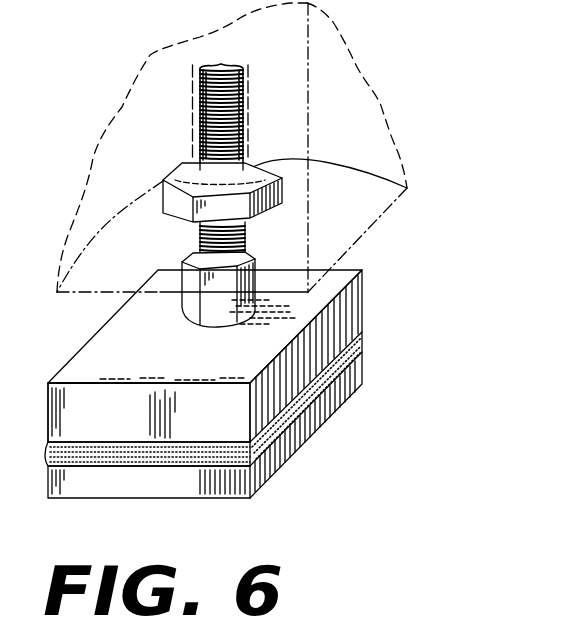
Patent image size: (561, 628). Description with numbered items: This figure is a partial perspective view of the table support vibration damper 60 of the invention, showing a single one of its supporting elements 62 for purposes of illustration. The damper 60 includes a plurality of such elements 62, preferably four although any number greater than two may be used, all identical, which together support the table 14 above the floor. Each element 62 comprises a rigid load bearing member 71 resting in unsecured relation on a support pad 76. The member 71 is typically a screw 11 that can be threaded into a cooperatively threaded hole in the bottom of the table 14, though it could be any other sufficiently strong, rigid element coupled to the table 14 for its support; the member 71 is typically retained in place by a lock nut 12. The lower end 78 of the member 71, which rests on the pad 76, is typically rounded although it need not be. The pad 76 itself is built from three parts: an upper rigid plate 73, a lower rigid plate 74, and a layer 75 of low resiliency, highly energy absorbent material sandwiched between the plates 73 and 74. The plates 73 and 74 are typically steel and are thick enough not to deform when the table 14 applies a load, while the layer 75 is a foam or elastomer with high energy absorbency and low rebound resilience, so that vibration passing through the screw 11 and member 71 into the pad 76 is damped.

The threaded bolt 11 is at (243, 101).
The hex nut 12 is at (283, 210).
The table 14 is at (131, 91).
The table support vibration damper 60 is at (403, 78).
The element 62 is at (40, 345).
The rigid load bearing member 71 is at (181, 236).
The upper rigid plate 73 is at (352, 302).
The lower rigid plate 74 is at (355, 380).
The layer 75 is at (362, 345).
The support pad 76 is at (226, 418).
The lower end 78 is at (197, 337).